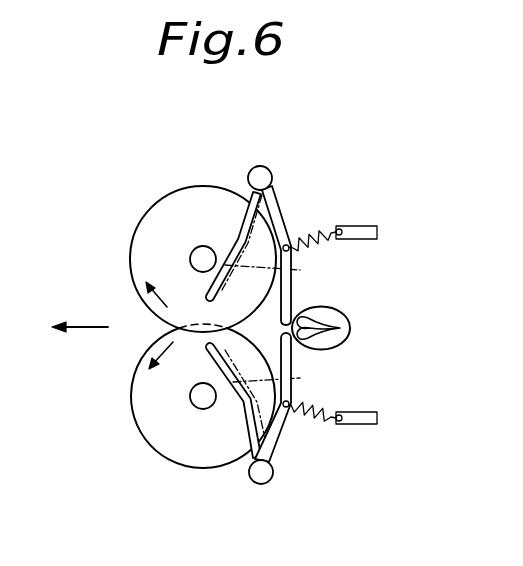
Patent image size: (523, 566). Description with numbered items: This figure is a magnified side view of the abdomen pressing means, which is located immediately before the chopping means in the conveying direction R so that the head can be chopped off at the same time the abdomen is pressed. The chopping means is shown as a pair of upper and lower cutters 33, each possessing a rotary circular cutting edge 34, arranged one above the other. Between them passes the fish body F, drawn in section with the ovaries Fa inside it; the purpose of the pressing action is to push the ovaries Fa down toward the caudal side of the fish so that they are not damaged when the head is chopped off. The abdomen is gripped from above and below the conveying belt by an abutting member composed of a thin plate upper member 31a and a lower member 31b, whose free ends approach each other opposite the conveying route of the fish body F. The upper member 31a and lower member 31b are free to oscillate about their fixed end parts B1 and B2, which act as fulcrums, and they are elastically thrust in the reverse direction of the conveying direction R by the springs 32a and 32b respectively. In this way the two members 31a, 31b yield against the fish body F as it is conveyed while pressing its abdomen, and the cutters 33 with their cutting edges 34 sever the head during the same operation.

The upper and lower cutters 33 is at (185, 170).
The rotary circular cutting edges 34 is at (167, 206).
The upper member 31a is at (292, 295).
The lower member 31b is at (292, 358).
The spring 32a is at (312, 222).
The spring 32b is at (318, 424).
The fixed end part B1 is at (252, 168).
The fixed end part B2 is at (270, 482).
The fish body F is at (353, 328).
The ovaries Fa is at (330, 347).
The conveying direction R is at (88, 328).